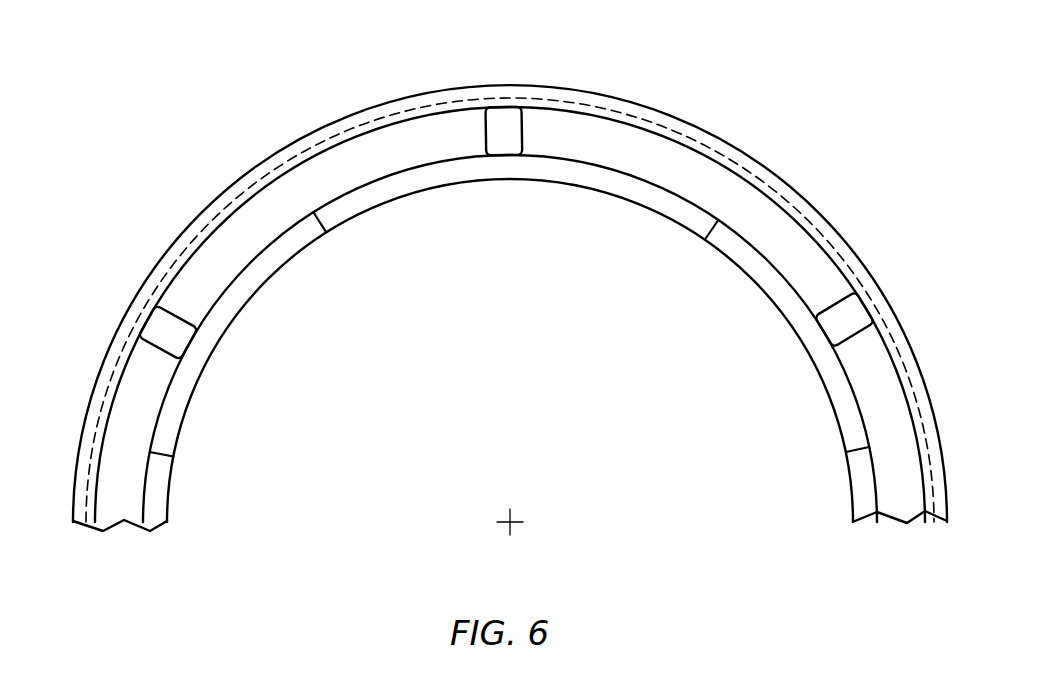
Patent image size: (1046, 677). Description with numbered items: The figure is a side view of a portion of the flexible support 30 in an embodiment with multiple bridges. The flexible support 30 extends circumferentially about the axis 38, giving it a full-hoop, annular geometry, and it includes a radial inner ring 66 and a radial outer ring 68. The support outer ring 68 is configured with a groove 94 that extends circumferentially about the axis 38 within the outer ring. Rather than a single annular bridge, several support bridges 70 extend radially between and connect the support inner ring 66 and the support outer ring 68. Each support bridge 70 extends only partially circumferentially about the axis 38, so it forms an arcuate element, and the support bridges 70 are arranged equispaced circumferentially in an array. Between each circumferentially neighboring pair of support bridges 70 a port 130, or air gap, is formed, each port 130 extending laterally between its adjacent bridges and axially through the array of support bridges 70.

The flexible support 30 is at (820, 108).
The axis 38 is at (517, 525).
The radial inner ring 66 is at (428, 195).
The radial outer ring 68 is at (365, 105).
The support bridge 70 is at (172, 457).
The groove 94 is at (558, 93).
The port 130 is at (498, 145).